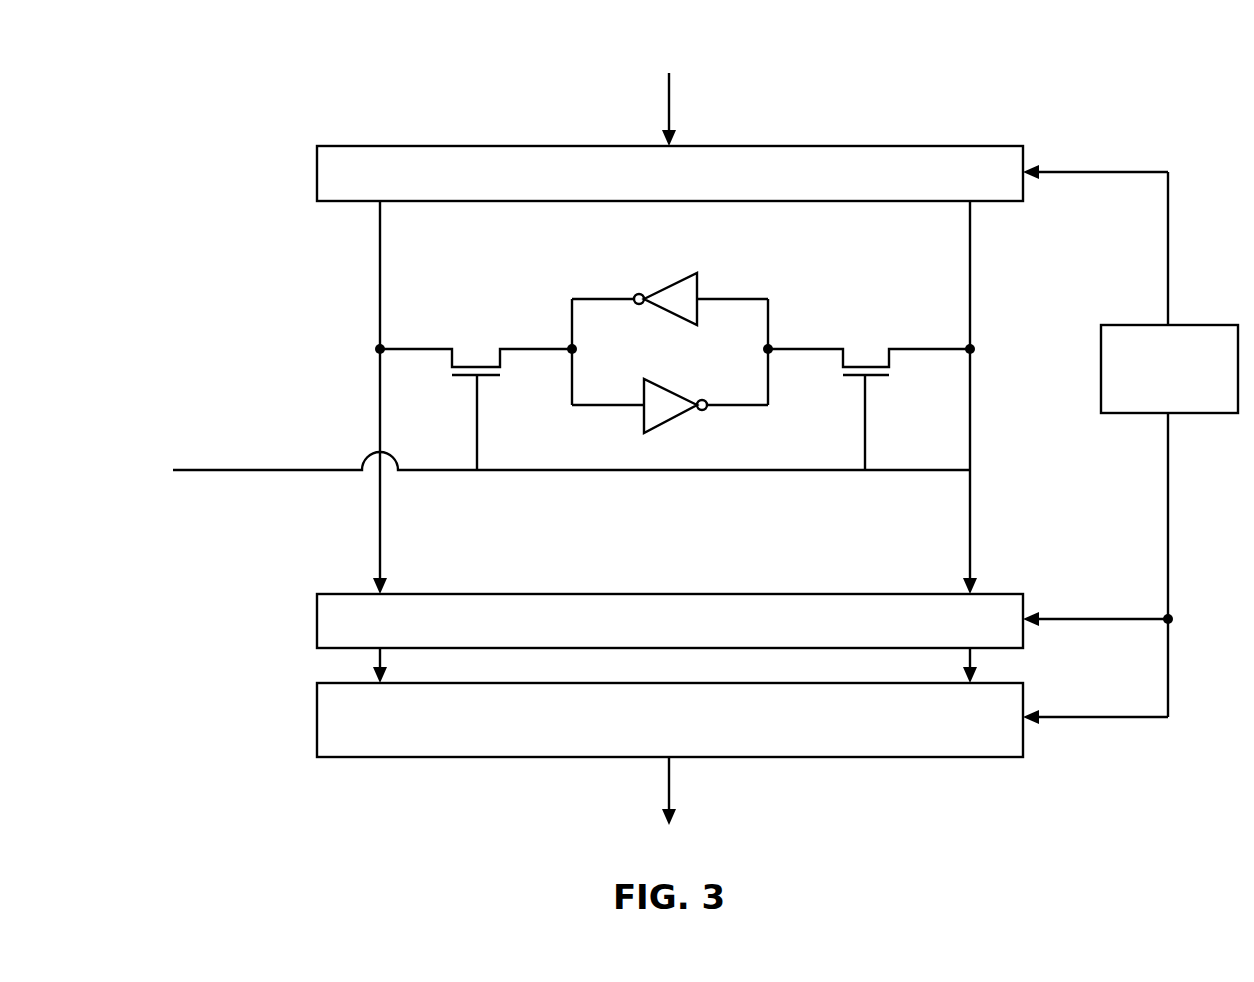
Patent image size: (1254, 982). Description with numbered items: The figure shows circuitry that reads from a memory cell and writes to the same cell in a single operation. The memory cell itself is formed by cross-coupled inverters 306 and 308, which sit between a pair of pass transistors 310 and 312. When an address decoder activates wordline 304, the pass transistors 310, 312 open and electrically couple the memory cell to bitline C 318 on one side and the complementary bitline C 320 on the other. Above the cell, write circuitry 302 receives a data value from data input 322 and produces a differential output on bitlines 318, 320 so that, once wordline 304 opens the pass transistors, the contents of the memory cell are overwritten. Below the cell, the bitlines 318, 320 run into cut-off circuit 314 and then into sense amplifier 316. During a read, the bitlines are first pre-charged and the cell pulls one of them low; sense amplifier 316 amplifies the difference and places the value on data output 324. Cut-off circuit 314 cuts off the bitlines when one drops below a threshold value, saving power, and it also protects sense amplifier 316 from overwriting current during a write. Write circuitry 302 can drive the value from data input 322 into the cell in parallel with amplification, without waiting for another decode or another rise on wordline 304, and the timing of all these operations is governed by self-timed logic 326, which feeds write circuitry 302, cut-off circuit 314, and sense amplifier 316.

The write circuitry 302 is at (670, 173).
The wordline 304 is at (541, 434).
The inverter 306 is at (670, 297).
The inverter 308 is at (670, 405).
The pass transistor 310 is at (476, 397).
The pass transistor 312 is at (869, 397).
The cut-off circuit 314 is at (670, 638).
The sense amplifier 316 is at (670, 720).
The bitline C 318 is at (398, 397).
The bitline C (complement) 320 is at (993, 397).
The data input 322 is at (669, 85).
The data output 324 is at (669, 815).
The self-timed logic 326 is at (1130, 444).